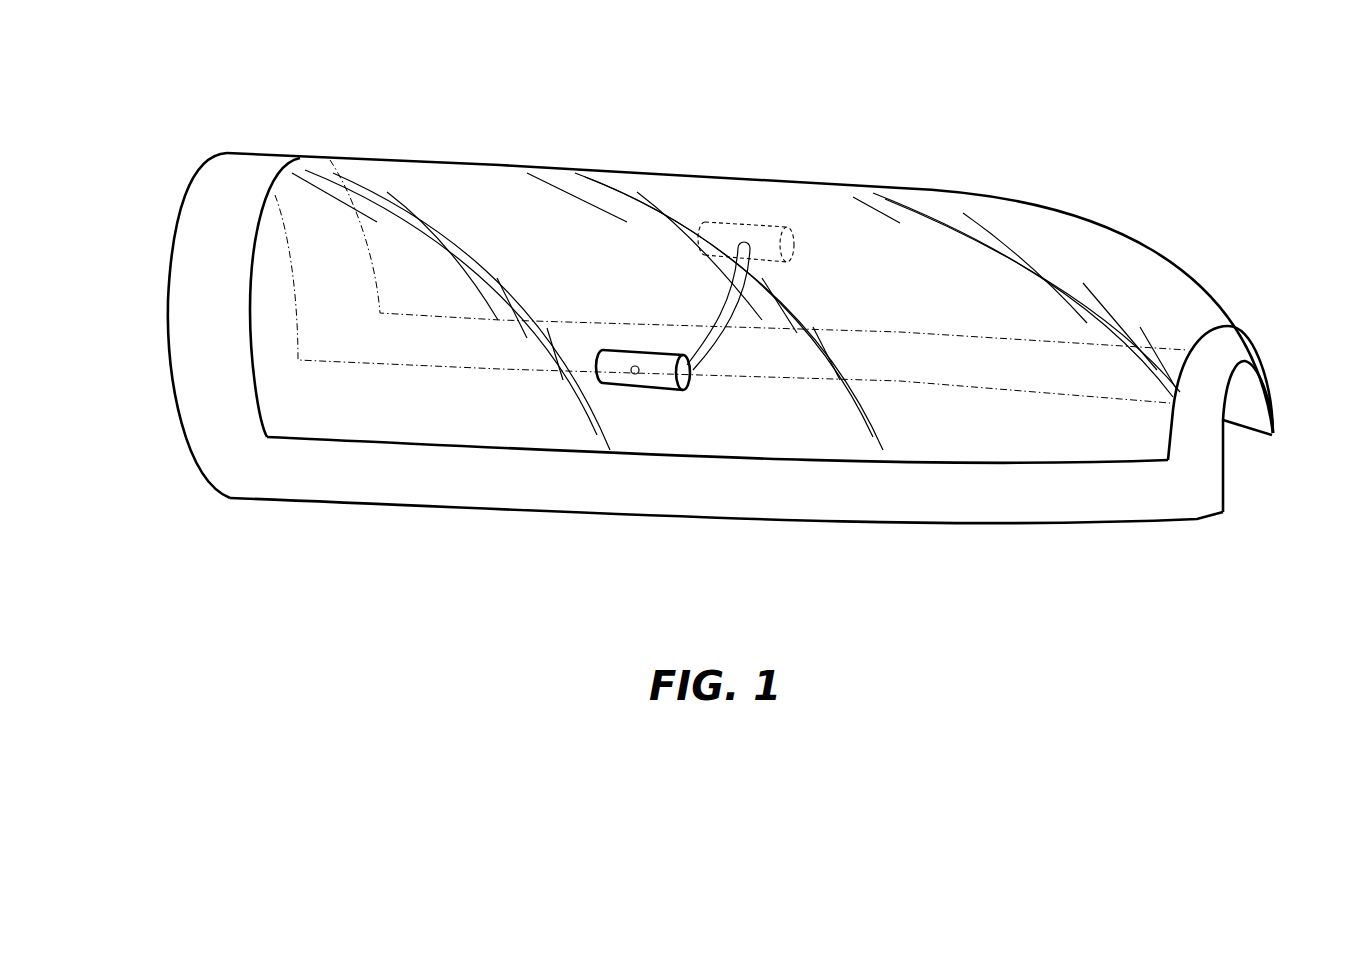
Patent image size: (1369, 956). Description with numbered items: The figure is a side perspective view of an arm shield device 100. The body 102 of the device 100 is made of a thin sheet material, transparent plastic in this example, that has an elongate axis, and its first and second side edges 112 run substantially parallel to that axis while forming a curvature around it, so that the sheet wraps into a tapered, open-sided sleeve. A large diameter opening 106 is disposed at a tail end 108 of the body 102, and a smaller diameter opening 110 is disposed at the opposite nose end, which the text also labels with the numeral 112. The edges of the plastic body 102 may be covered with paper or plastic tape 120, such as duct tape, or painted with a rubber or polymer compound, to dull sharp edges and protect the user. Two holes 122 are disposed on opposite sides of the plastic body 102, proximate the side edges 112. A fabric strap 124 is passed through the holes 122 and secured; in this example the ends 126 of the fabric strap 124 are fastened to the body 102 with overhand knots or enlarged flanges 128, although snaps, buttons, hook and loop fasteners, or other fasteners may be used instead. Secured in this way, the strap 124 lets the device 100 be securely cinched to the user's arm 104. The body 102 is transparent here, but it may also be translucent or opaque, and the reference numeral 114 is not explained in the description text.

The arm shield device 100 is at (793, 123).
The body 102 is at (1052, 227).
The user's arm 104 is at (704, 368).
The large diameter opening 106 is at (157, 395).
The tail end 108 is at (180, 210).
The smaller diameter opening 110 is at (1252, 452).
The side edges 112 is at (1268, 347).
The bottom edge 114 is at (1197, 522).
The tape 120 is at (983, 500).
The holes 122 is at (780, 275).
The fabric strap 124 is at (720, 317).
The ends of the fabric strap 126 is at (635, 376).
The enlarged flanges 128 is at (684, 380).